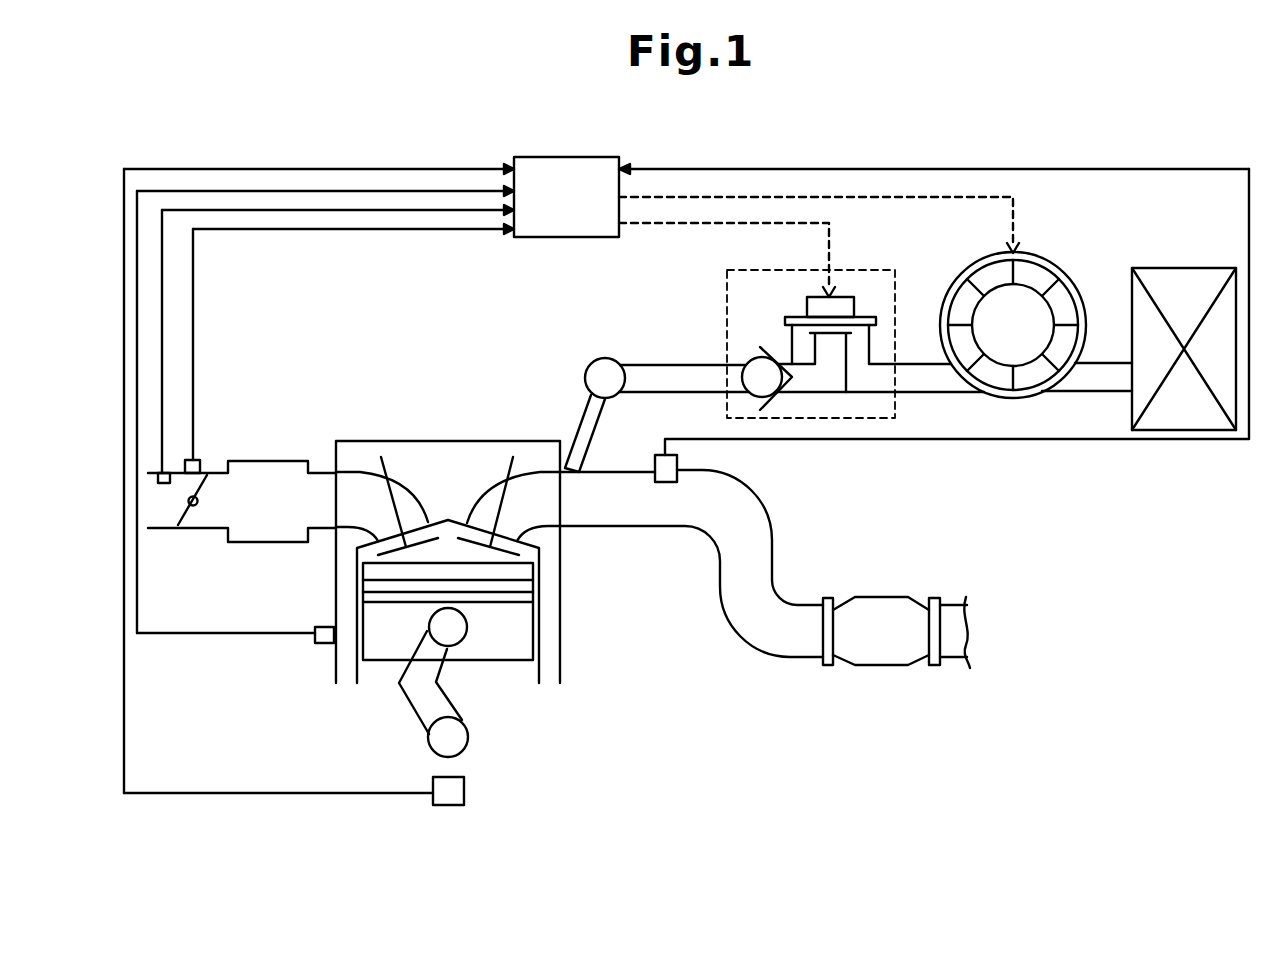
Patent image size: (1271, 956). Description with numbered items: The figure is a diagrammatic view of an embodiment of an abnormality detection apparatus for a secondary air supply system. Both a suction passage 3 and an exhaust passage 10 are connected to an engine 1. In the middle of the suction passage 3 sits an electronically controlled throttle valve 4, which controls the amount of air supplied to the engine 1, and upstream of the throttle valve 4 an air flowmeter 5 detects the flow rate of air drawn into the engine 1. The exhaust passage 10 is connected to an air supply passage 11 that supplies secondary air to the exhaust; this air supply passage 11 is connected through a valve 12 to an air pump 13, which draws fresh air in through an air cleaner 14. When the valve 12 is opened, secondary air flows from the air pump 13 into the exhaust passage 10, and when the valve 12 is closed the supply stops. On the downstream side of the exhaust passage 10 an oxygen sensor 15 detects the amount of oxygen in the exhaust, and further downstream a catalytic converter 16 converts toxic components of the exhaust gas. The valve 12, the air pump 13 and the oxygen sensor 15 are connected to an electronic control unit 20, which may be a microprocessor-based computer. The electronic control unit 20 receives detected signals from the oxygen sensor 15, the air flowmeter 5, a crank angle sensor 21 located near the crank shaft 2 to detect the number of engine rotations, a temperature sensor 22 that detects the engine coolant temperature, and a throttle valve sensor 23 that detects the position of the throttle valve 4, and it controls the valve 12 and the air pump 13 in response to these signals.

The engine 1 is at (561, 655).
The crank shaft 2 is at (468, 737).
The suction passage 3 is at (320, 485).
The throttle valve 4 is at (200, 501).
The air flowmeter 5 is at (163, 484).
The exhaust passage 10 is at (652, 528).
The air supply passage 11 is at (925, 362).
The valve 12 is at (844, 300).
The air pump 13 is at (1036, 256).
The air cleaner 14 is at (1217, 268).
The oxygen sensor 15 is at (678, 464).
The catalytic converter 16 is at (884, 606).
The electronic control unit 20 is at (598, 237).
The crank angle sensor 21 is at (465, 793).
The temperature sensor 22 is at (327, 647).
The throttle valve sensor 23 is at (204, 466).